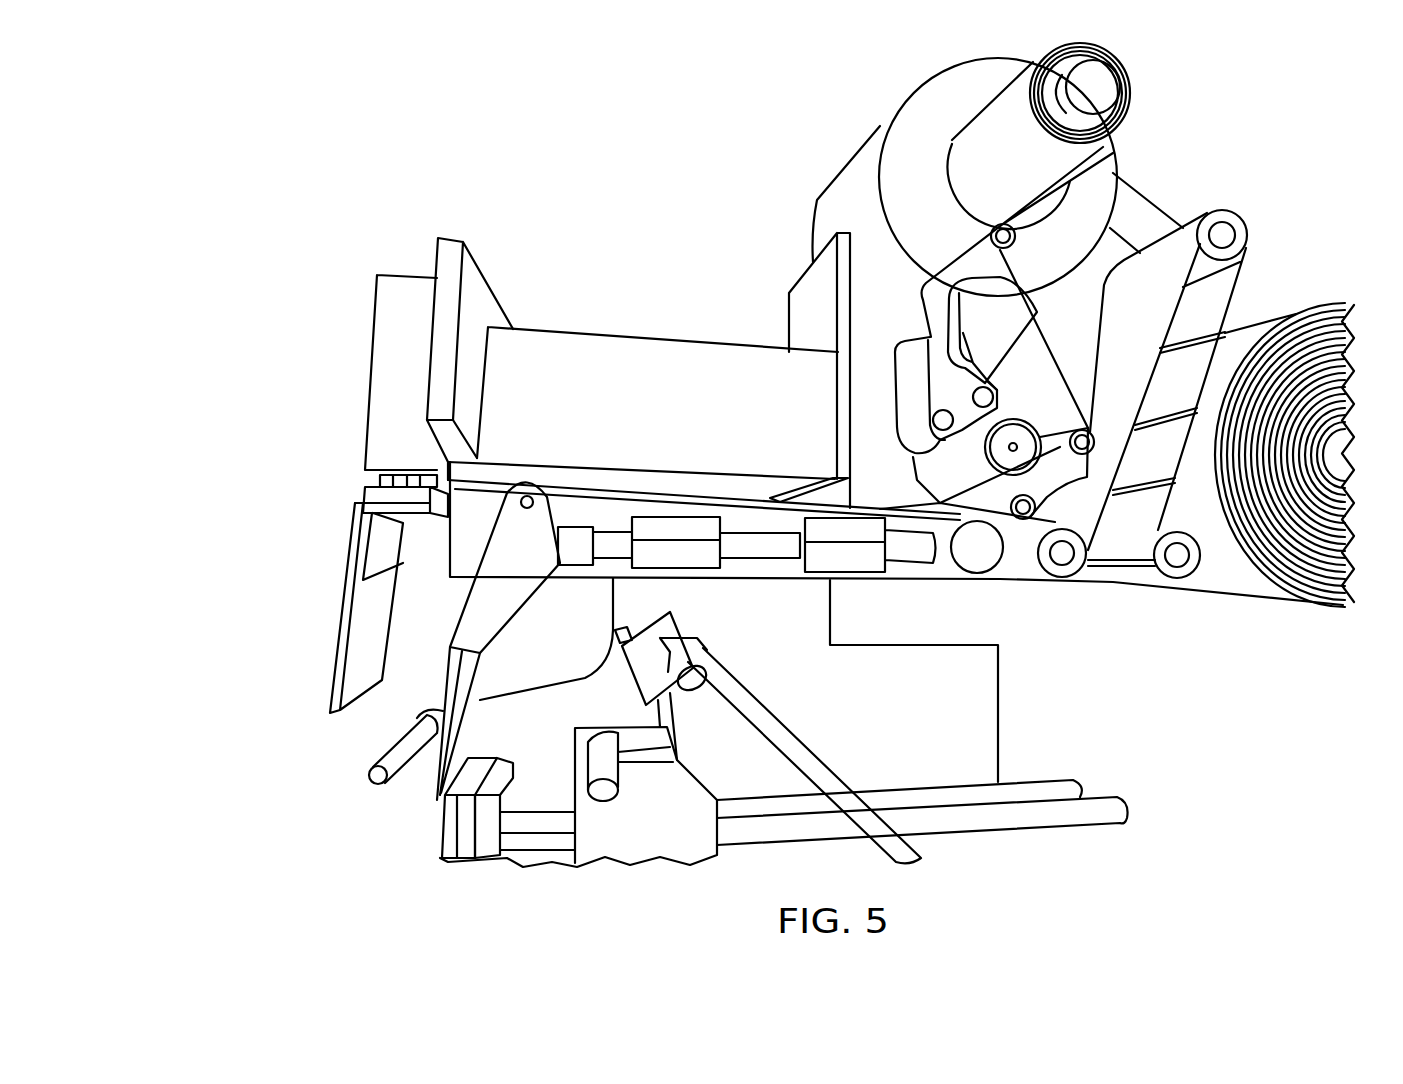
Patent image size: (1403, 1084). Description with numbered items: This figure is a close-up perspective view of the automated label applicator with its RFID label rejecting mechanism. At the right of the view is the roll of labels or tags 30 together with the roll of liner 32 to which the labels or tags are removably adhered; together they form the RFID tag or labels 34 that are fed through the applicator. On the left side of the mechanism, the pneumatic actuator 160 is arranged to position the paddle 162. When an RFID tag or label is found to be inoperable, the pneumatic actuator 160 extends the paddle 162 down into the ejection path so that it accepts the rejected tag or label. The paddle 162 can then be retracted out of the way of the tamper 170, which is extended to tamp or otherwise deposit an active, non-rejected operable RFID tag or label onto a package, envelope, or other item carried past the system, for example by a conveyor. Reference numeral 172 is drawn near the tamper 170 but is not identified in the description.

The roll of labels or tags 30 is at (1231, 596).
The roll of liner 32 is at (1022, 176).
The RFID tag or labels 34 is at (1113, 584).
The pneumatic actuator 160 is at (340, 380).
The paddle 162 is at (335, 628).
The tamper 170 is at (457, 840).
The clamp block side face 172 is at (470, 860).